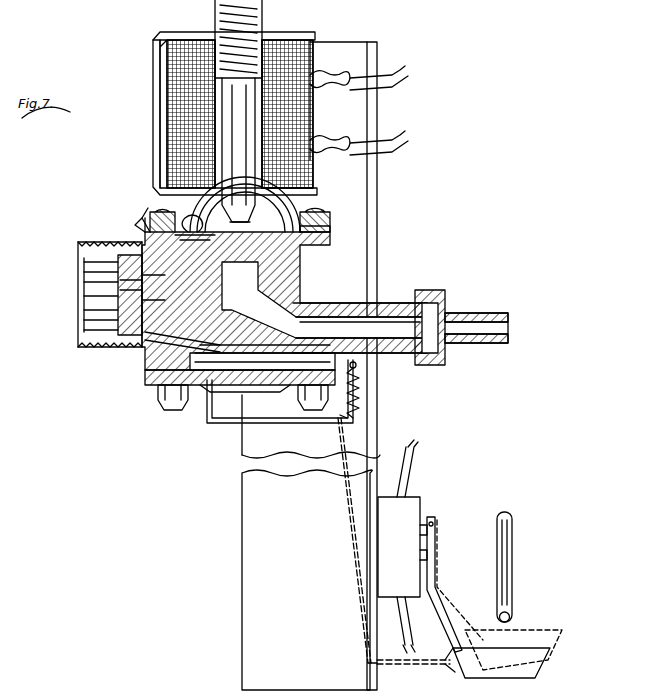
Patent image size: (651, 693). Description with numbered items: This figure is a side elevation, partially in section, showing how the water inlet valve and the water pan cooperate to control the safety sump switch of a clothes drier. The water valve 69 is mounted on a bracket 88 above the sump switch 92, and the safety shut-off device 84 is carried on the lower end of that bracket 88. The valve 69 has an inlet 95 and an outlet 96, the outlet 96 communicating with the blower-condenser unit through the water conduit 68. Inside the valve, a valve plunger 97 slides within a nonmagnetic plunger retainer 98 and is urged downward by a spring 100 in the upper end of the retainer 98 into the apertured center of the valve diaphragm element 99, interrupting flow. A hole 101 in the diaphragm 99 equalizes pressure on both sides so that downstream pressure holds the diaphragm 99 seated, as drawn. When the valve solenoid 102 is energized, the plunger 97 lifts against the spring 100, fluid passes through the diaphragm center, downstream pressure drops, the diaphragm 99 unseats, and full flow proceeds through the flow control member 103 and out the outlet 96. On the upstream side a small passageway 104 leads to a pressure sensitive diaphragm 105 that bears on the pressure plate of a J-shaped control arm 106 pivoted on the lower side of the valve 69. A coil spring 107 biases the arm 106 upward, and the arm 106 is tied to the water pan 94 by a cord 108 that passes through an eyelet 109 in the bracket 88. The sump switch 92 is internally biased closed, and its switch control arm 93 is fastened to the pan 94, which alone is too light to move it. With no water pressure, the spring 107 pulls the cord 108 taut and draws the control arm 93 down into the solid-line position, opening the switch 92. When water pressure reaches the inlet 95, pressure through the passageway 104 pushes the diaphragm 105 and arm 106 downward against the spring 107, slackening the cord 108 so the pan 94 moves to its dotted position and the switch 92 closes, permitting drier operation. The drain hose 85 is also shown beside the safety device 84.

The water conduit 68 is at (508, 312).
The water valve 69 is at (119, 207).
The safety shut-off device 84 is at (457, 493).
The drain hose 85 is at (511, 588).
The bracket 88 is at (256, 530).
The sump switch 92 is at (408, 500).
The switch control arm 93 is at (440, 604).
The water pan 94 is at (535, 672).
The inlet 95 is at (84, 306).
The outlet 96 is at (393, 322).
The valve plunger 97 is at (216, 125).
The plunger retainer 98 is at (263, 22).
The valve diaphragm element 99 is at (290, 218).
The spring 100 is at (228, 20).
The hole 101 is at (206, 218).
The valve solenoid 102 is at (308, 53).
The flow control member 103 is at (128, 332).
The passageway 104 is at (162, 335).
The pressure sensitive diaphragm 105 is at (207, 395).
The J-shaped control arm 106 is at (225, 430).
The coil spring 107 is at (356, 406).
The cord 108 is at (348, 527).
The eyelet 109 is at (378, 680).